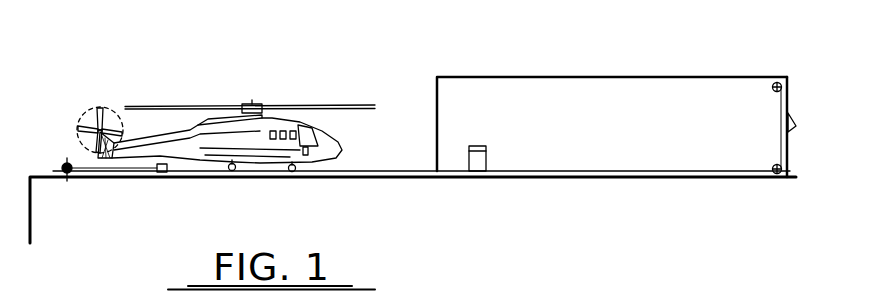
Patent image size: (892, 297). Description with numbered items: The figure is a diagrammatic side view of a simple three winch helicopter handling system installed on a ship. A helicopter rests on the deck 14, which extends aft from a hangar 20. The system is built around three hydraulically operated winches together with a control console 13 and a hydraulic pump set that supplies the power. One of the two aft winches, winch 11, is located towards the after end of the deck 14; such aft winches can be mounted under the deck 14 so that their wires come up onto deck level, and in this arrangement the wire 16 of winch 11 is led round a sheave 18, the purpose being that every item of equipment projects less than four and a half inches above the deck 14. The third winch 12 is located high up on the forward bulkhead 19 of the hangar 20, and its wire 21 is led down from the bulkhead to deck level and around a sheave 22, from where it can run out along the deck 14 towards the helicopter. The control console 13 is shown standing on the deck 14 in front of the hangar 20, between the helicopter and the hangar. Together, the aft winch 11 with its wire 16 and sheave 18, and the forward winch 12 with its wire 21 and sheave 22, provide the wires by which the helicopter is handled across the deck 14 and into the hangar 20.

The winch 11 is at (70, 178).
The third winch 12 is at (775, 83).
The control console 13 is at (487, 150).
The deck 14 is at (393, 180).
The wire 16 is at (112, 178).
The sheave 18 is at (163, 180).
The forward bulkhead 19 is at (792, 128).
The hangar 20 is at (538, 77).
The wire 21 is at (780, 97).
The sheave 22 is at (773, 177).